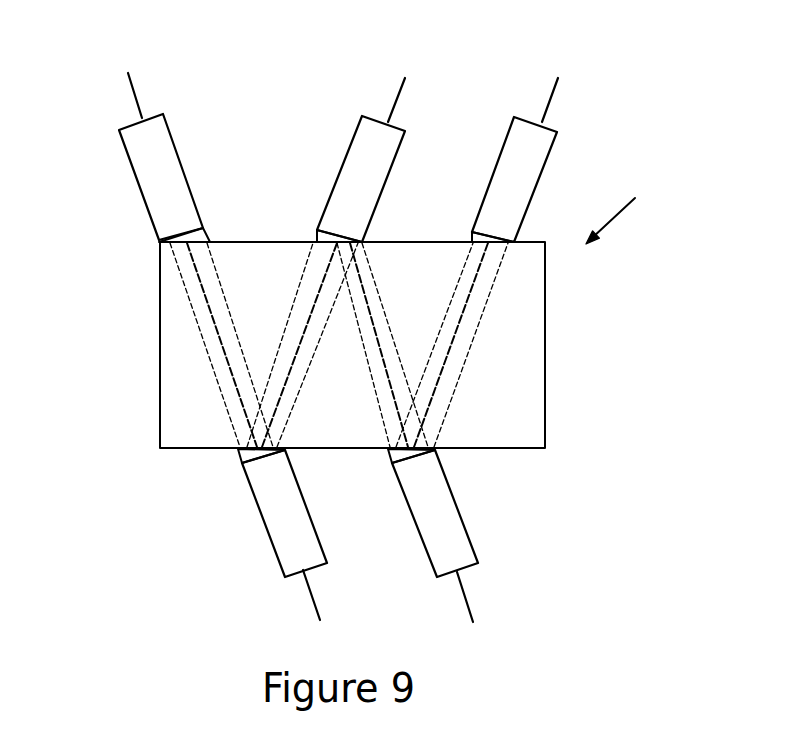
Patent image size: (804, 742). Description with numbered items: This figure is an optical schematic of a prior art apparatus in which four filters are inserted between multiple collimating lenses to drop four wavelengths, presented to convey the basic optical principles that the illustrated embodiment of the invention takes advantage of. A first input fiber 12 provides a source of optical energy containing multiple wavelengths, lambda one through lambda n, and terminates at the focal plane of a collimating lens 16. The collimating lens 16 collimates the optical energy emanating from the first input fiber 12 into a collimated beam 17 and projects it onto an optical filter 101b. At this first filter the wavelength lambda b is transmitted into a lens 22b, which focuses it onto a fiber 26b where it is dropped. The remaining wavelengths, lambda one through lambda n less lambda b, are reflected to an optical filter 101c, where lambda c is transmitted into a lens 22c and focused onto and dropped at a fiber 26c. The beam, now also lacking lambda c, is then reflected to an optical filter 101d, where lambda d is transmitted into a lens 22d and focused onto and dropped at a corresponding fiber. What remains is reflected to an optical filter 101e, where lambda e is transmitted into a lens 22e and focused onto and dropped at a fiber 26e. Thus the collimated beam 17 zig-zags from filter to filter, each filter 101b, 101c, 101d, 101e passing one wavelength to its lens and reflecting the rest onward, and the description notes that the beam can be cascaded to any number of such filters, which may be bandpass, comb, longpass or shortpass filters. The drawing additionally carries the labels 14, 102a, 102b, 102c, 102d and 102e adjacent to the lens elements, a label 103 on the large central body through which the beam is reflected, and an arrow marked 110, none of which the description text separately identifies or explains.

The first input fiber 12 is at (135, 82).
The ultrasonic transducer 14 is at (113, 120).
The collimating lens 16 is at (135, 178).
The collimated beam 17 is at (195, 338).
The lens 22b is at (275, 520).
The lens 22c is at (343, 168).
The lens 22d is at (433, 510).
The lens 22e is at (492, 177).
The fiber 26b is at (310, 606).
The fiber 26c is at (397, 102).
The fiber 26e is at (548, 111).
The optical filter 101b is at (277, 447).
The optical filter 101c is at (318, 252).
The optical filter 101d is at (433, 448).
The optical filter 101e is at (478, 252).
The coupling wedge 102a is at (212, 240).
The coupling wedge 102b is at (240, 457).
The coupling wedge 102c is at (313, 233).
The coupling wedge 102d is at (403, 457).
The coupling wedge 102e is at (468, 234).
The test object 103 is at (518, 360).
The direction of travel 110 is at (627, 206).